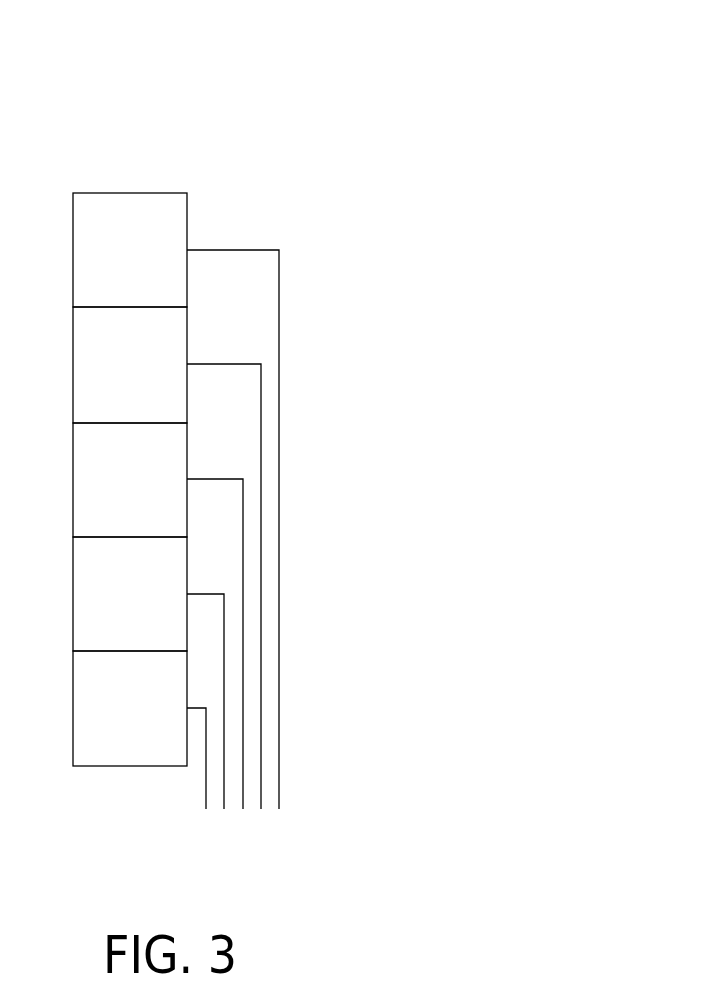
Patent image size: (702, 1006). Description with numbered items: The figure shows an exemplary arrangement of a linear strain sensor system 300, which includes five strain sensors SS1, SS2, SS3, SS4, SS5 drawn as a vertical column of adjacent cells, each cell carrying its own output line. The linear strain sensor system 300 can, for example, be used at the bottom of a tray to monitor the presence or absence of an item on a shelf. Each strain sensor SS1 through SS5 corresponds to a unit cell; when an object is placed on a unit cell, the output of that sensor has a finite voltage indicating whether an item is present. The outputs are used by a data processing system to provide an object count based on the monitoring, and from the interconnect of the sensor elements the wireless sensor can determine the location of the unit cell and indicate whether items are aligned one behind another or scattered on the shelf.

The linear strain sensor system 300 is at (218, 420).
The strain sensor SS1 is at (154, 262).
The strain sensor SS2 is at (154, 376).
The strain sensor SS3 is at (154, 491).
The strain sensor SS4 is at (154, 606).
The strain sensor SS5 is at (154, 720).